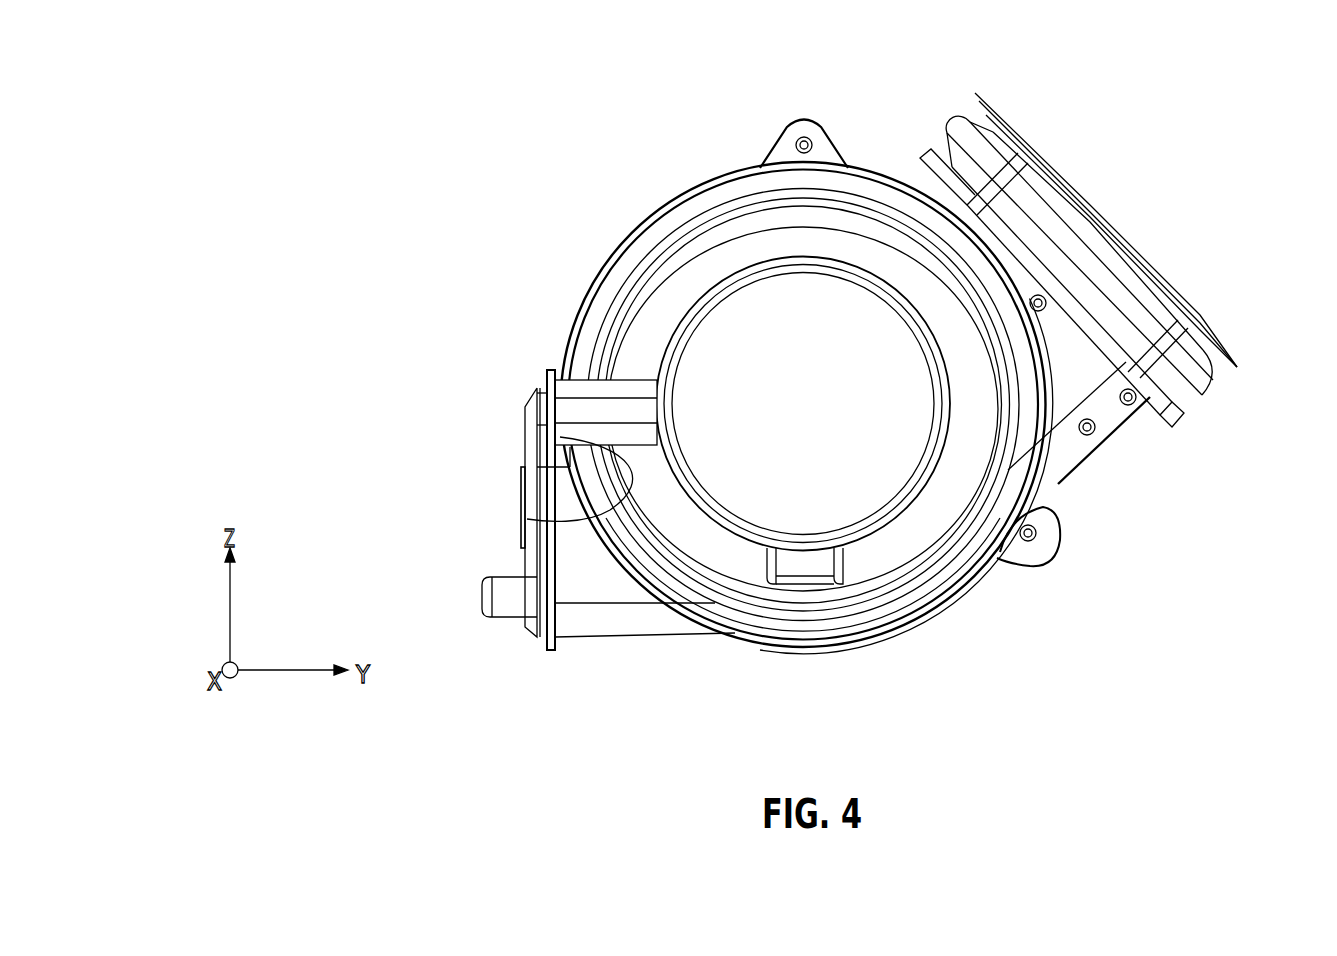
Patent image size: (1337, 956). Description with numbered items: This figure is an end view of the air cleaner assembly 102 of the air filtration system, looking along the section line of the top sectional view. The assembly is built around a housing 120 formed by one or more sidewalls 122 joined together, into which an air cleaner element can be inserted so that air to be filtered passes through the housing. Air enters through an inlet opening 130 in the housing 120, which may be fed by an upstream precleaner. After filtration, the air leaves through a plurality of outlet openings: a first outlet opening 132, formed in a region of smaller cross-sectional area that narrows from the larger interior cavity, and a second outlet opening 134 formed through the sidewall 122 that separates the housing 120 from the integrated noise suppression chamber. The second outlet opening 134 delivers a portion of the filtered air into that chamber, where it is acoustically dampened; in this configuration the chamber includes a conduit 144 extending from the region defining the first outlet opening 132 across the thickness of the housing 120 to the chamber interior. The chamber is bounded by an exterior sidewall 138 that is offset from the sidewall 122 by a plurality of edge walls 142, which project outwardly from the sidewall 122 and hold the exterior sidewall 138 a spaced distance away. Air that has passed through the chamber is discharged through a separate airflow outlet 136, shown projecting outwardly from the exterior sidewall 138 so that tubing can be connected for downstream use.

The air cleaner assembly 102 is at (1242, 108).
The housing 120 is at (888, 113).
The sidewall 122 is at (930, 615).
The inlet opening 130 is at (1175, 225).
The first outlet opening 132 is at (722, 345).
The second outlet opening 134 is at (684, 408).
The airflow outlet 136 is at (492, 618).
The exterior sidewall 138 is at (526, 457).
The edge walls 142 is at (556, 388).
The conduit 144 is at (527, 512).